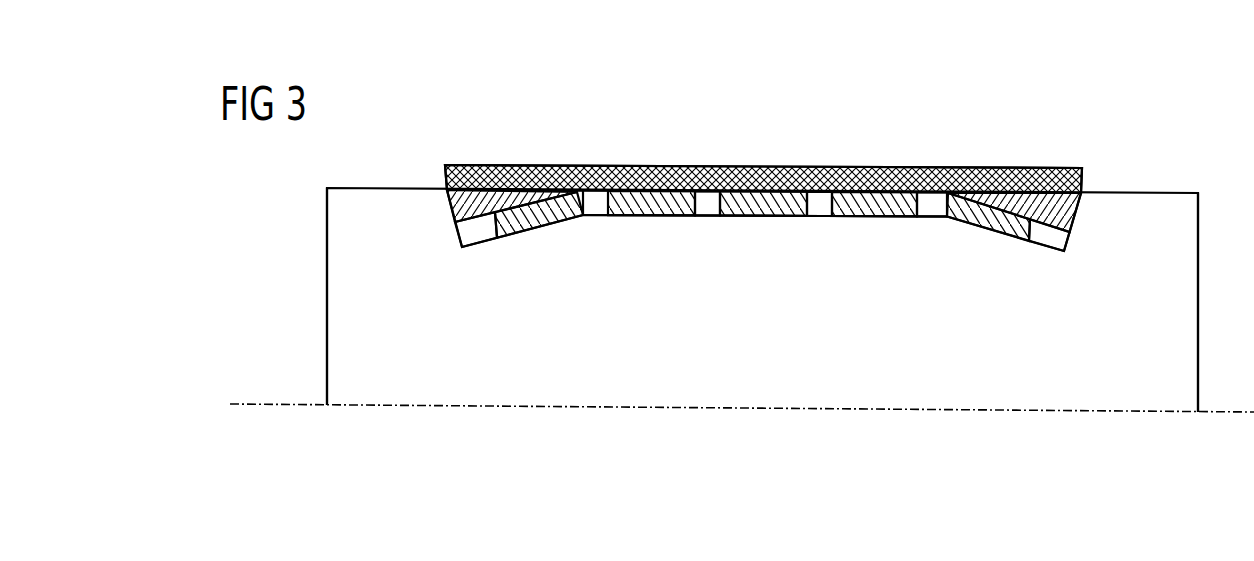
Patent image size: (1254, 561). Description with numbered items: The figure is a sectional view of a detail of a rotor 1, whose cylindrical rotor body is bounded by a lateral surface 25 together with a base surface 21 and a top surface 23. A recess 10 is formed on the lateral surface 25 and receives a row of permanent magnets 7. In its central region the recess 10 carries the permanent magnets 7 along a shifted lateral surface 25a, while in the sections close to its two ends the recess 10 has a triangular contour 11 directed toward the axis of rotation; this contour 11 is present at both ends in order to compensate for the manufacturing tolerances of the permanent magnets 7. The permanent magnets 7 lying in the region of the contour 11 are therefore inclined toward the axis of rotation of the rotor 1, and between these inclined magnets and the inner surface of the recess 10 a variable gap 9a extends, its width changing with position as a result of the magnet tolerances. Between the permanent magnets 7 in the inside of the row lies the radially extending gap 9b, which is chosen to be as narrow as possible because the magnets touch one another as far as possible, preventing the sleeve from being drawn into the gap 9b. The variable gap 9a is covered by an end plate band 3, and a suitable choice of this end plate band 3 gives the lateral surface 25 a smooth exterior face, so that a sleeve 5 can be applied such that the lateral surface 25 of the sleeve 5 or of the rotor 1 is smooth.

The rotor 1 is at (806, 98).
The end plate band 3 is at (494, 190).
The sleeve 5 is at (465, 165).
The permanent magnets 7 is at (653, 207).
The variable gap 9a is at (1043, 239).
The gap 9b is at (820, 207).
The recess 10 is at (706, 203).
The triangular contour 11 is at (523, 243).
The base surface 21 is at (321, 294).
The top surface 23 is at (1205, 299).
The lateral surface 25 is at (384, 183).
The shifted lateral surface 25a is at (781, 223).